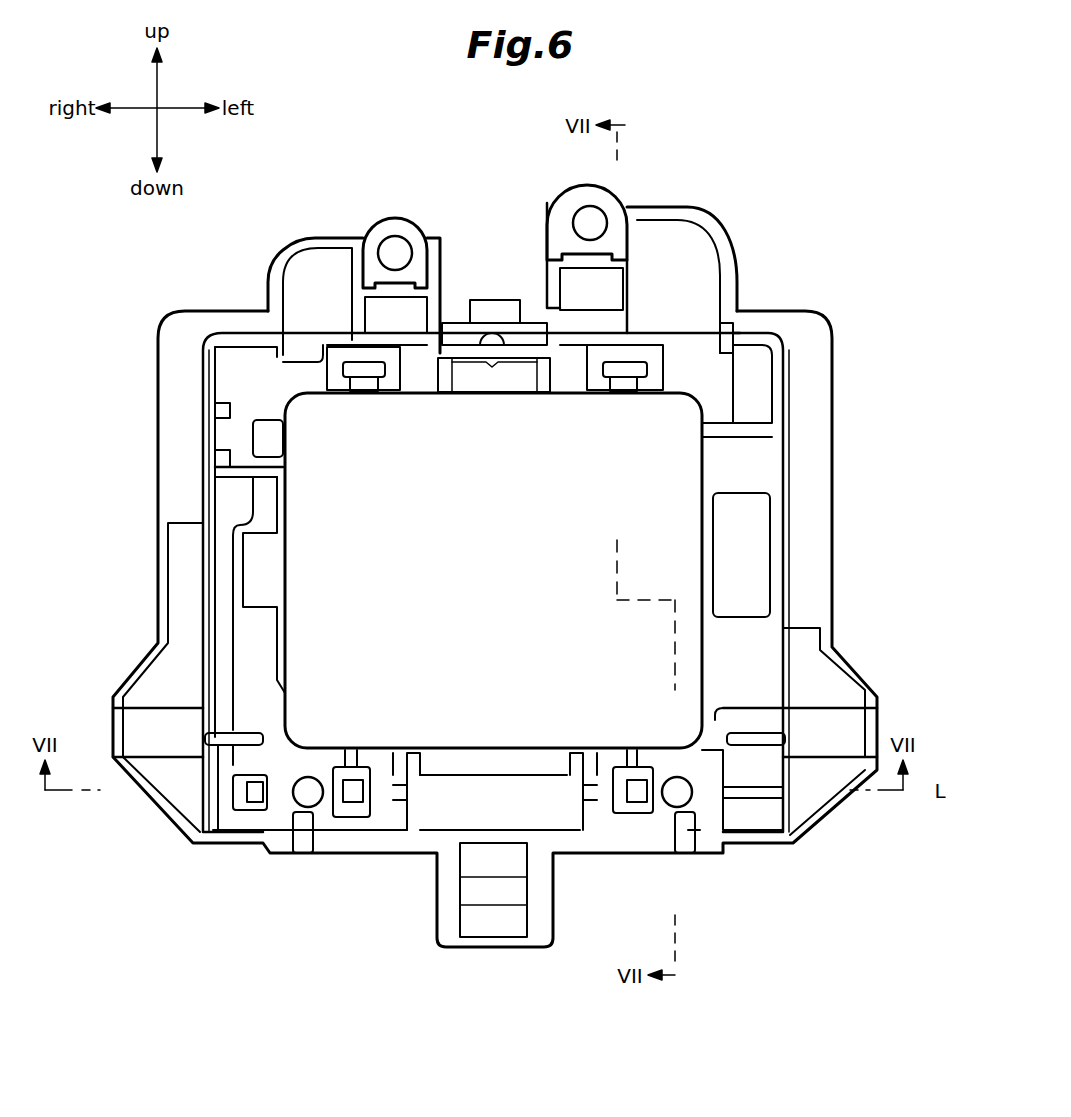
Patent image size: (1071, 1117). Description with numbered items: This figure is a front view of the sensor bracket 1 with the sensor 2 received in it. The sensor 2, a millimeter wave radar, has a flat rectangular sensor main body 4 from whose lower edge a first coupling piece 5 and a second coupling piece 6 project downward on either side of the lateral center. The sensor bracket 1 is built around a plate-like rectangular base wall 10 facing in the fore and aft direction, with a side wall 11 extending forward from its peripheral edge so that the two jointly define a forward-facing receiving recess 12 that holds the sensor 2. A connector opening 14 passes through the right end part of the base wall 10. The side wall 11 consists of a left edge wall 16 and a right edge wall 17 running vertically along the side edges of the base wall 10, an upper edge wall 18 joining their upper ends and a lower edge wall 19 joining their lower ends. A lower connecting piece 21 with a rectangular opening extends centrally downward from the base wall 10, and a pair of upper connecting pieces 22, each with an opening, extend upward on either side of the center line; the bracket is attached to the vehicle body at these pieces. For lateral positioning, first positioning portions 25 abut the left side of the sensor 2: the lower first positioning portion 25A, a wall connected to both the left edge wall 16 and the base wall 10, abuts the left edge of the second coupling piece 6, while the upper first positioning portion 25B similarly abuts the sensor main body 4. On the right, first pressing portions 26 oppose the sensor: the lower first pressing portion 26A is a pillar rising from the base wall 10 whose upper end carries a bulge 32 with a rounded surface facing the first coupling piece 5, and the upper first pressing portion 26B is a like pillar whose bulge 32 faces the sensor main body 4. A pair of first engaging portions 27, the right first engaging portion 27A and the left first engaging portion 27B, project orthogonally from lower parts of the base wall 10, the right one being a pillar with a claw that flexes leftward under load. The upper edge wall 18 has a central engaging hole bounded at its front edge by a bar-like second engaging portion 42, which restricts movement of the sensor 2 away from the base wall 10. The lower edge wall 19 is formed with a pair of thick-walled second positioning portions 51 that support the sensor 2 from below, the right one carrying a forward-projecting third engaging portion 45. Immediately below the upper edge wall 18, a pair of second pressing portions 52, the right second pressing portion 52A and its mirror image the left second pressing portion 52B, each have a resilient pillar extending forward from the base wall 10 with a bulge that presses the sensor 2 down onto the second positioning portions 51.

The sensor bracket 1 is at (152, 300).
The sensor 2 is at (708, 460).
The sensor main body 4 is at (683, 548).
The first coupling piece 5 is at (326, 765).
The second coupling piece 6 is at (660, 765).
The base wall 10 is at (742, 635).
The side wall 11 is at (790, 365).
The receiving recess 12 is at (760, 688).
The connector opening 14 is at (225, 660).
The left edge wall 16 is at (775, 521).
The right edge wall 17 is at (207, 498).
The upper edge wall 18 is at (345, 340).
The lower edge wall 19 is at (393, 835).
The lower connecting piece 21 is at (496, 950).
The upper connecting pieces 22 is at (398, 222).
The support wall 25 is at (755, 800).
The lower first positioning portion 25A is at (733, 800).
The upper first positioning portion 25B is at (735, 425).
The engaging portion 26 is at (235, 791).
The lower first pressing portion 26A is at (248, 812).
The upper first pressing portion 26B is at (255, 438).
The first engaging portions 27 is at (372, 756).
The right first engaging portion 27A is at (357, 768).
The holding portion 27B is at (633, 768).
The bulge 32 is at (273, 427).
The second engaging portion 42 is at (492, 352).
The locking piece 45 is at (300, 822).
The second positioning portions 51 is at (313, 850).
The second pressing portions 52 is at (372, 393).
The right second pressing portion 52A is at (365, 395).
The left second pressing portion 52B is at (625, 395).